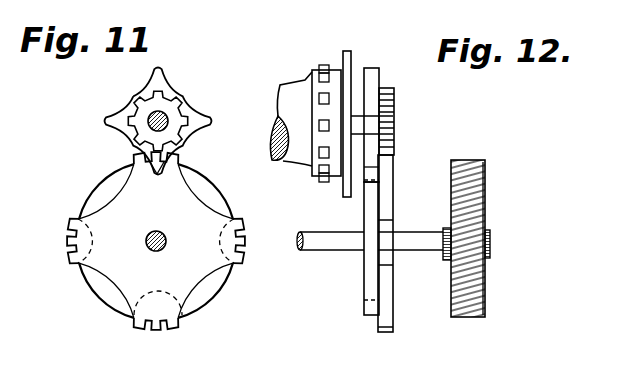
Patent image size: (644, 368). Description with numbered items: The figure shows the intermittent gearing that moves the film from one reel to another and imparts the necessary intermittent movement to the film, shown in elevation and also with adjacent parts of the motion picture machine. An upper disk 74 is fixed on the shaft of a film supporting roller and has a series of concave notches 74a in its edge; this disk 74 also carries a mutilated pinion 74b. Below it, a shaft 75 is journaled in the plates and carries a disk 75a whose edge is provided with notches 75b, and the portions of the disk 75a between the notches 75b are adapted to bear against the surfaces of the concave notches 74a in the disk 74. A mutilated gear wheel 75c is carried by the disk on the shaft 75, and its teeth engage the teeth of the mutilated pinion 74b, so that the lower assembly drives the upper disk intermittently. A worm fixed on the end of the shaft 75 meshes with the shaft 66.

In FIG. 11, the disk 74 is at (163, 76).
In FIG. 12, the disk 74 is at (371, 76).
In FIG. 11, the concave notches 74a is at (197, 108).
In FIG. 11, the mutilated pinion 74b is at (140, 117).
In FIG. 12, the mutilated pinion 74b is at (396, 118).
In FIG. 11, the shaft 75 is at (156, 231).
In FIG. 12, the shaft 75 is at (300, 253).
In FIG. 11, the disk 75a is at (207, 190).
In FIG. 12, the disk 75a is at (513, 240).
In FIG. 11, the notches 75b is at (220, 310).
In FIG. 11, the mutilated gear wheel 75c is at (138, 272).
In FIG. 12, the mutilated gear wheel 75c is at (385, 293).
In FIG. 12, the shaft 66 is at (486, 185).